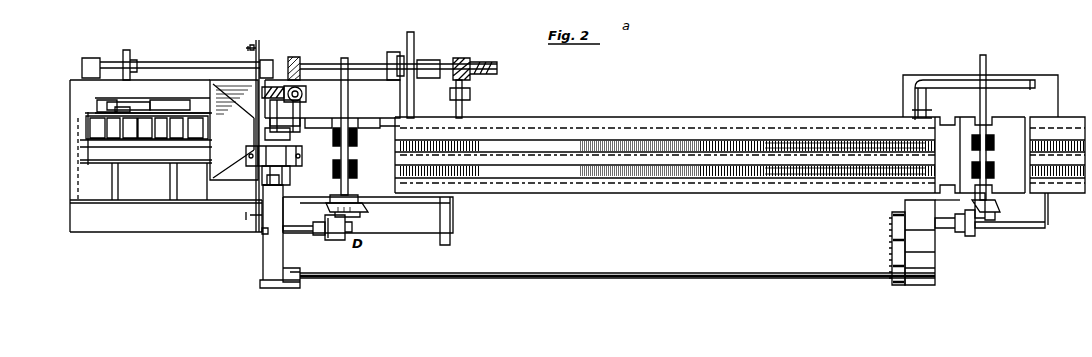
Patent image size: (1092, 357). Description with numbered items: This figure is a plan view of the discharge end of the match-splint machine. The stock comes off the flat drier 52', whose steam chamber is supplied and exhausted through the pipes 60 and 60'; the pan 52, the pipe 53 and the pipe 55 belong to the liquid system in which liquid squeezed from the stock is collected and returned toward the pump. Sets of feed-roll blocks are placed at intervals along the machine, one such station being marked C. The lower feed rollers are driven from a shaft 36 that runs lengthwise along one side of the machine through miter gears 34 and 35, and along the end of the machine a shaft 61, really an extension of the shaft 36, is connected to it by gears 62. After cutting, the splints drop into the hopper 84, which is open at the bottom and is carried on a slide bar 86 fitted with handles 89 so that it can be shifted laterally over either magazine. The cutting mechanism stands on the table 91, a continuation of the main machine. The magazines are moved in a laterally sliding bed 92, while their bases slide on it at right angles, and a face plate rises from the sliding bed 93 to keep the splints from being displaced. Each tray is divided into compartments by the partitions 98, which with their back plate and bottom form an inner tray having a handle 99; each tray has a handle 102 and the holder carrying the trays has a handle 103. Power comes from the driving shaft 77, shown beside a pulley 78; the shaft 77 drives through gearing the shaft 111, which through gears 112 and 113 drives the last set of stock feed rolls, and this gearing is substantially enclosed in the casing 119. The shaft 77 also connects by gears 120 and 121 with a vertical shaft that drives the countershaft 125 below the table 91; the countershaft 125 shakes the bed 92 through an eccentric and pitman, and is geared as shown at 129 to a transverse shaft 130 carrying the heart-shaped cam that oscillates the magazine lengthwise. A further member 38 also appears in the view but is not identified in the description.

The handle 99 is at (108, 100).
The handle 102 is at (144, 100).
The handle 103 is at (166, 100).
The partitions 98 is at (134, 138).
The sliding bed 93 is at (72, 182).
The table 91 is at (105, 236).
The laterally sliding bed 92 is at (147, 206).
The hopper 84 is at (234, 158).
The handles 89 is at (247, 46).
The slide bar 86 is at (260, 58).
The gear 120 is at (293, 66).
The gear 121 is at (302, 90).
The rod 38 is at (346, 60).
The countershaft 125 is at (386, 60).
The pipe 60 is at (430, 64).
The gearing 129 is at (476, 59).
The transverse shaft 130 is at (466, 106).
The pulley 78 is at (290, 134).
The driving shaft 77 is at (280, 176).
The pipe 53 is at (768, 138).
The flat drier 52' is at (665, 142).
The pipe 55 is at (776, 178).
The feed roller station C is at (980, 155).
The pipe 60' is at (980, 125).
The pan 52 is at (1057, 144).
The casing 119 is at (262, 252).
The shaft 111 is at (303, 233).
The gear 112 is at (338, 238).
The gear 113 is at (370, 208).
The shaft 61 is at (694, 272).
The gears 62 is at (892, 238).
The miter gear 35 is at (968, 236).
The miter gear 34 is at (990, 222).
The shaft 36 is at (1032, 230).